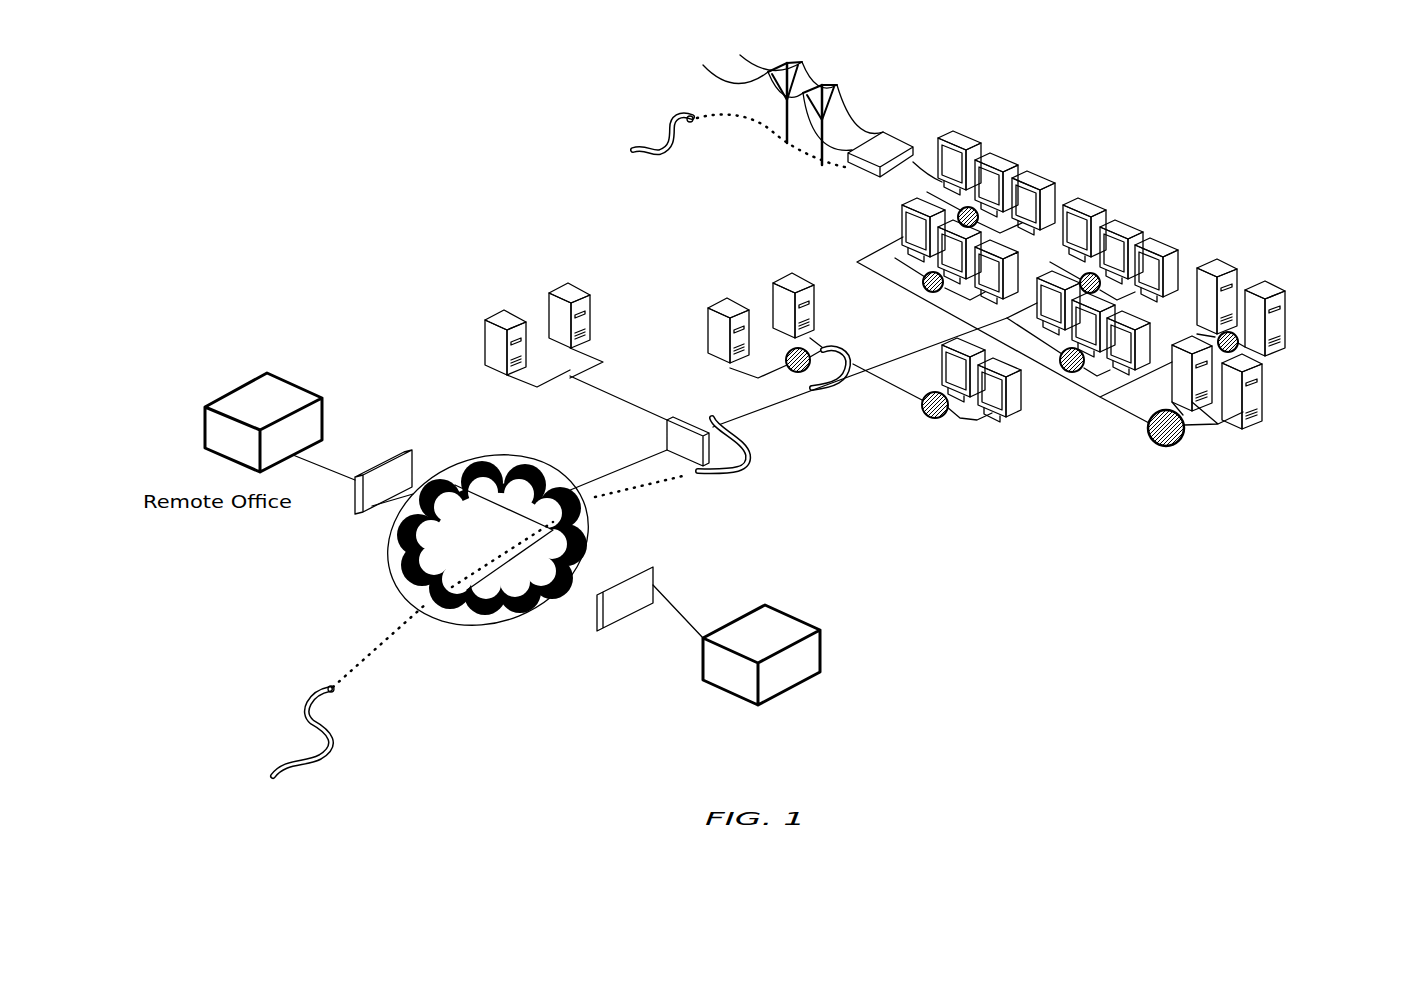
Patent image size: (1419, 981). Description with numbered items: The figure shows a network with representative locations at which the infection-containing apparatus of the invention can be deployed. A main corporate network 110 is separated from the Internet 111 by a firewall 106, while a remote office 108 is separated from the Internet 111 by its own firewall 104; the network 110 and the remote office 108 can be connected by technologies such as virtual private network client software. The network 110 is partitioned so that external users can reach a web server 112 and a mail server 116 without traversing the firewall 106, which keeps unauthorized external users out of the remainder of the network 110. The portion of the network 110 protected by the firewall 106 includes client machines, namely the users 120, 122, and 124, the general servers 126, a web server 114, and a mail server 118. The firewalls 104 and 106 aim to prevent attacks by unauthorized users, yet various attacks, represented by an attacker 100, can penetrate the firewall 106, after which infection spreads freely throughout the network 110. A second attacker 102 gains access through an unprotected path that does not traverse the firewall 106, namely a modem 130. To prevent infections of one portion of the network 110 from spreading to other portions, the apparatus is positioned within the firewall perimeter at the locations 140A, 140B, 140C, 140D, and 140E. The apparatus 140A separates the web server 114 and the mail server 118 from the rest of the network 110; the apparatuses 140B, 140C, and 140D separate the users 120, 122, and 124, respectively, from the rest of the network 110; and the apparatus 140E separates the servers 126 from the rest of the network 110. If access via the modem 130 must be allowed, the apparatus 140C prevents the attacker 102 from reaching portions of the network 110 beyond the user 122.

The attacker 100 is at (292, 706).
The attacker 102 is at (651, 128).
The firewall 104 is at (628, 630).
The firewall 106 is at (660, 438).
The remote office 108 is at (793, 700).
The main corporate network 110 is at (1142, 612).
The Internet 111 is at (488, 630).
The web server 112 is at (485, 306).
The web server 114 is at (720, 298).
The mail server 116 is at (557, 280).
The mail server 118 is at (777, 268).
The user 120 is at (1020, 422).
The user 122 is at (1040, 163).
The user 124 is at (1160, 230).
The general servers 126 is at (1300, 300).
The modem 130 is at (905, 130).
The apparatus 140A is at (798, 378).
The apparatus 140B is at (935, 428).
The apparatus 140C is at (972, 205).
The apparatus 140D is at (1096, 270).
The apparatus 140E is at (1262, 355).